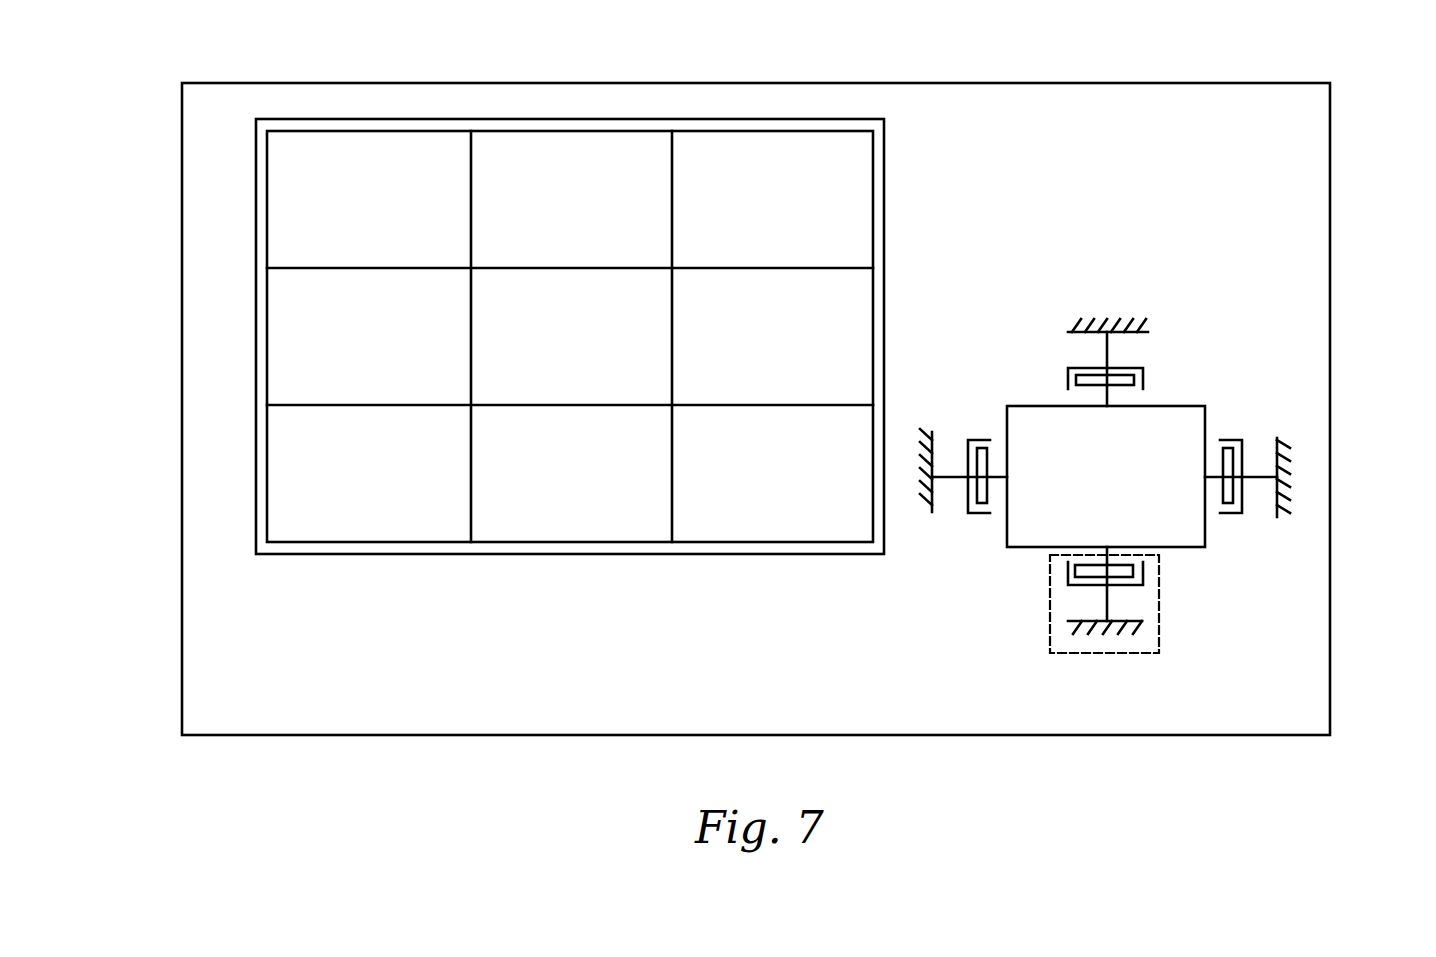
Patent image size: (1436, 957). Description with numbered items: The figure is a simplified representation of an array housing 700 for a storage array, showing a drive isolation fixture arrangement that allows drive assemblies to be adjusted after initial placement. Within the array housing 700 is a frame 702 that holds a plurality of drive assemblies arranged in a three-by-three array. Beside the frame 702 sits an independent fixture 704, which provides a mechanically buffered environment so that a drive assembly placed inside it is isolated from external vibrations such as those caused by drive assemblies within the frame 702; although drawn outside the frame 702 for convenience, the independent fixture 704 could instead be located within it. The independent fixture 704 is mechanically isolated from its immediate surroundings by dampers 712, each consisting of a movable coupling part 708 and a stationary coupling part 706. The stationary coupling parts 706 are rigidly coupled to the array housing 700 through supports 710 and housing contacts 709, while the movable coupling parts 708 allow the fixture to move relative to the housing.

The array housing 700 is at (1312, 77).
The frame 702 is at (900, 172).
The independent fixture 704 is at (1178, 405).
The stationary coupling part 706 is at (1143, 568).
The movable coupling part 708 is at (1091, 562).
The housing contact 709 is at (1143, 621).
The support 710 is at (1106, 604).
The damper 712 is at (1050, 585).